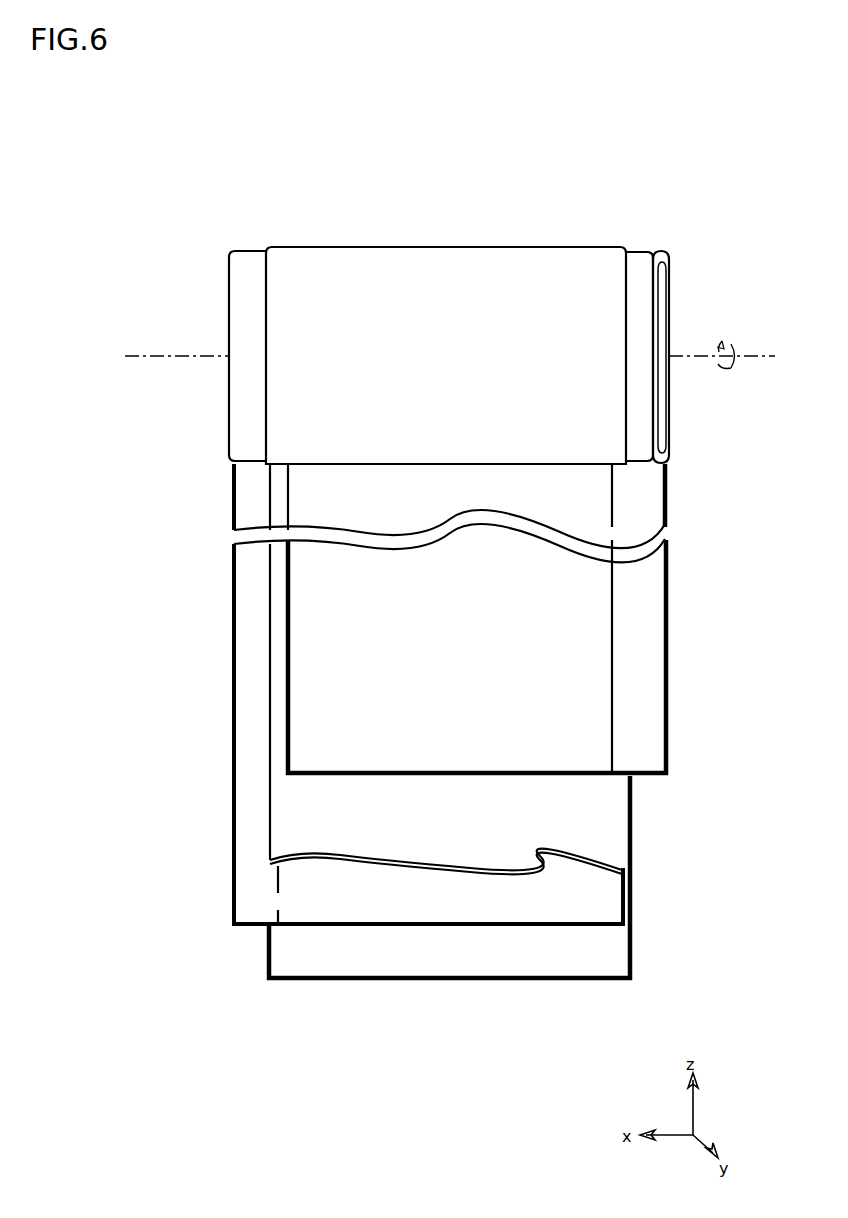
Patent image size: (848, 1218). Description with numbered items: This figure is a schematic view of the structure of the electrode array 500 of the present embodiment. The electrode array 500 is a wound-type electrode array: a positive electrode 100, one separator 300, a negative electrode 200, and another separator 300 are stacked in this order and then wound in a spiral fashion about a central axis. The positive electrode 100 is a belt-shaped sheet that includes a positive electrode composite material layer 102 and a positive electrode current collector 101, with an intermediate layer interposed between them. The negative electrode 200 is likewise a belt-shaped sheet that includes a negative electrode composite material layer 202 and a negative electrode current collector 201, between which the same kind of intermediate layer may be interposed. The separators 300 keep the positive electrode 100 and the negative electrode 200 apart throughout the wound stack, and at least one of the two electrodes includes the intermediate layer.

The electrode array 500 is at (207, 188).
The positive electrode 100 is at (534, 618).
The positive electrode current collector 101 is at (650, 648).
The positive electrode composite material layer 102 is at (603, 597).
The negative electrode 200 is at (336, 694).
The negative electrode current collector 201 is at (234, 817).
The negative electrode composite material layer 202 is at (320, 905).
The separator 300 is at (630, 830).